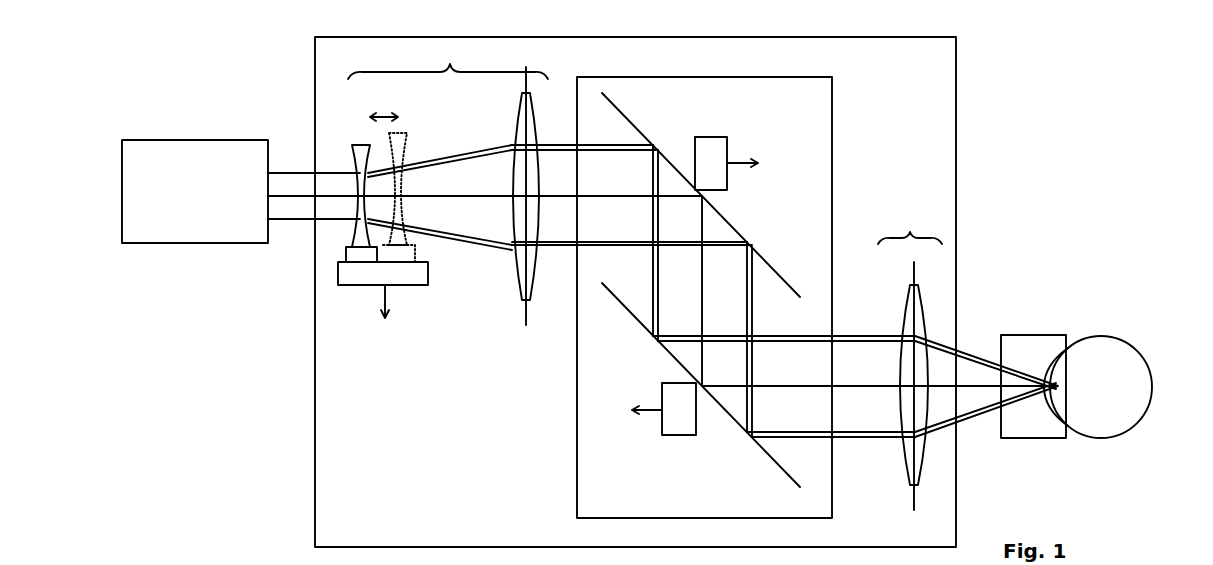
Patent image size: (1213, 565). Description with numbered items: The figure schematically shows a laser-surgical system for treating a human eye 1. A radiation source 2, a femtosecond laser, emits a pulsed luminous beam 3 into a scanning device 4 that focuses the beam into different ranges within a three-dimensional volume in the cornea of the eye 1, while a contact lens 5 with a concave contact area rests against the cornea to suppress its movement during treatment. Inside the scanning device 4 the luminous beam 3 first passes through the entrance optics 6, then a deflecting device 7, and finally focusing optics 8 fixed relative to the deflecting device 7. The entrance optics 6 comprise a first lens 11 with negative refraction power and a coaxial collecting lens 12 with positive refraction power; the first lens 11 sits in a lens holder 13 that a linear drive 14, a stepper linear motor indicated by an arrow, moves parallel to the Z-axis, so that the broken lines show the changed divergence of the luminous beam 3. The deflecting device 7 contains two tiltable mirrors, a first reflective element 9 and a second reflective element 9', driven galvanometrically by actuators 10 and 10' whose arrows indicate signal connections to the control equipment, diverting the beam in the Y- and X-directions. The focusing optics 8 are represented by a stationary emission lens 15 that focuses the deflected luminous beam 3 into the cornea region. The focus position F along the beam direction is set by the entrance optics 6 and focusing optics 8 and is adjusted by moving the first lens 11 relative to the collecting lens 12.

The eye 1 is at (1115, 357).
The radiation source 2 is at (215, 240).
The luminous beam 3 is at (292, 222).
The scanning device 4 is at (327, 375).
The contact lens 5 is at (1048, 338).
The entrance optics 6 is at (448, 59).
The deflecting device 7 is at (583, 377).
The focusing optics 8 is at (910, 353).
The first reflective element 9 is at (707, 195).
The second reflective element 9' is at (701, 390).
The actuator 10 is at (732, 138).
The actuator 10' is at (661, 445).
The first lens 11 is at (353, 146).
The collecting lens 12 is at (517, 273).
The lens holder 13 is at (343, 259).
The linear drive 14 is at (378, 284).
The emission lens 15 is at (925, 300).
The focus position F is at (1052, 398).